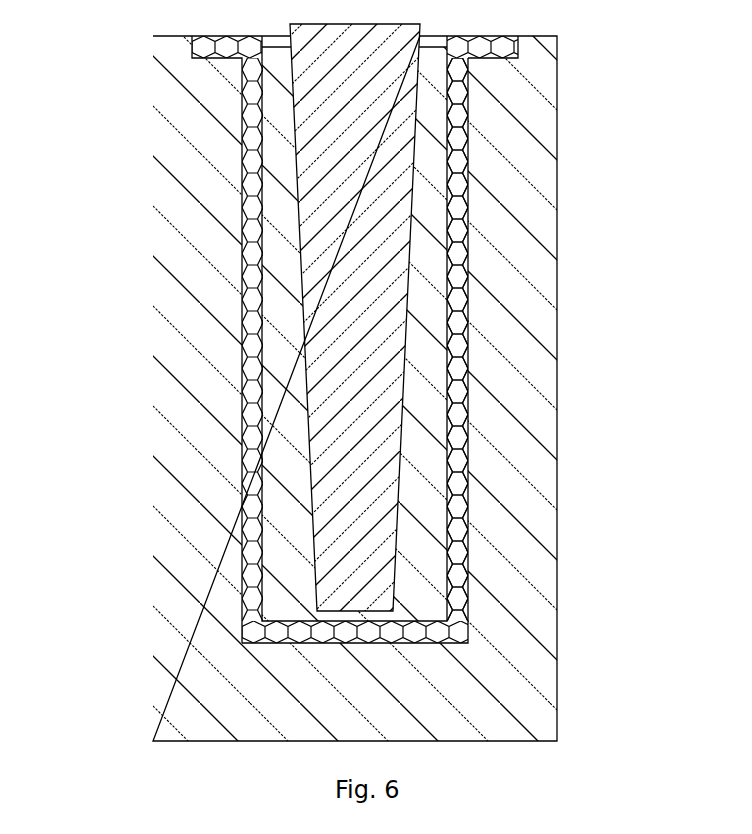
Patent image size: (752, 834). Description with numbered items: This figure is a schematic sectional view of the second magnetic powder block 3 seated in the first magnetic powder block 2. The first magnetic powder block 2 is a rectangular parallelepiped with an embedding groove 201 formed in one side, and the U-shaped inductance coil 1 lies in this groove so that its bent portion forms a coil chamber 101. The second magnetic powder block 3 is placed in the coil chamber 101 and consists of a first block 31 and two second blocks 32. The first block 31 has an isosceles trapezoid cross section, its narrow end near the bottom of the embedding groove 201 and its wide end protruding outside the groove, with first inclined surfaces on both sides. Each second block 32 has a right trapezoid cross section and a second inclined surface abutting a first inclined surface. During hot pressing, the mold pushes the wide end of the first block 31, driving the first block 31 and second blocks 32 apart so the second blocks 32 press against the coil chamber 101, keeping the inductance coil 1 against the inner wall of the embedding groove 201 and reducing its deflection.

The inductance coil 1 is at (468, 99).
The coil chamber 101 is at (453, 160).
The first magnetic powder block 2 is at (510, 412).
The embedding groove 201 is at (468, 252).
The second magnetic powder block 3 is at (48, 258).
The first block 31 is at (362, 300).
The second block 32 is at (292, 360).